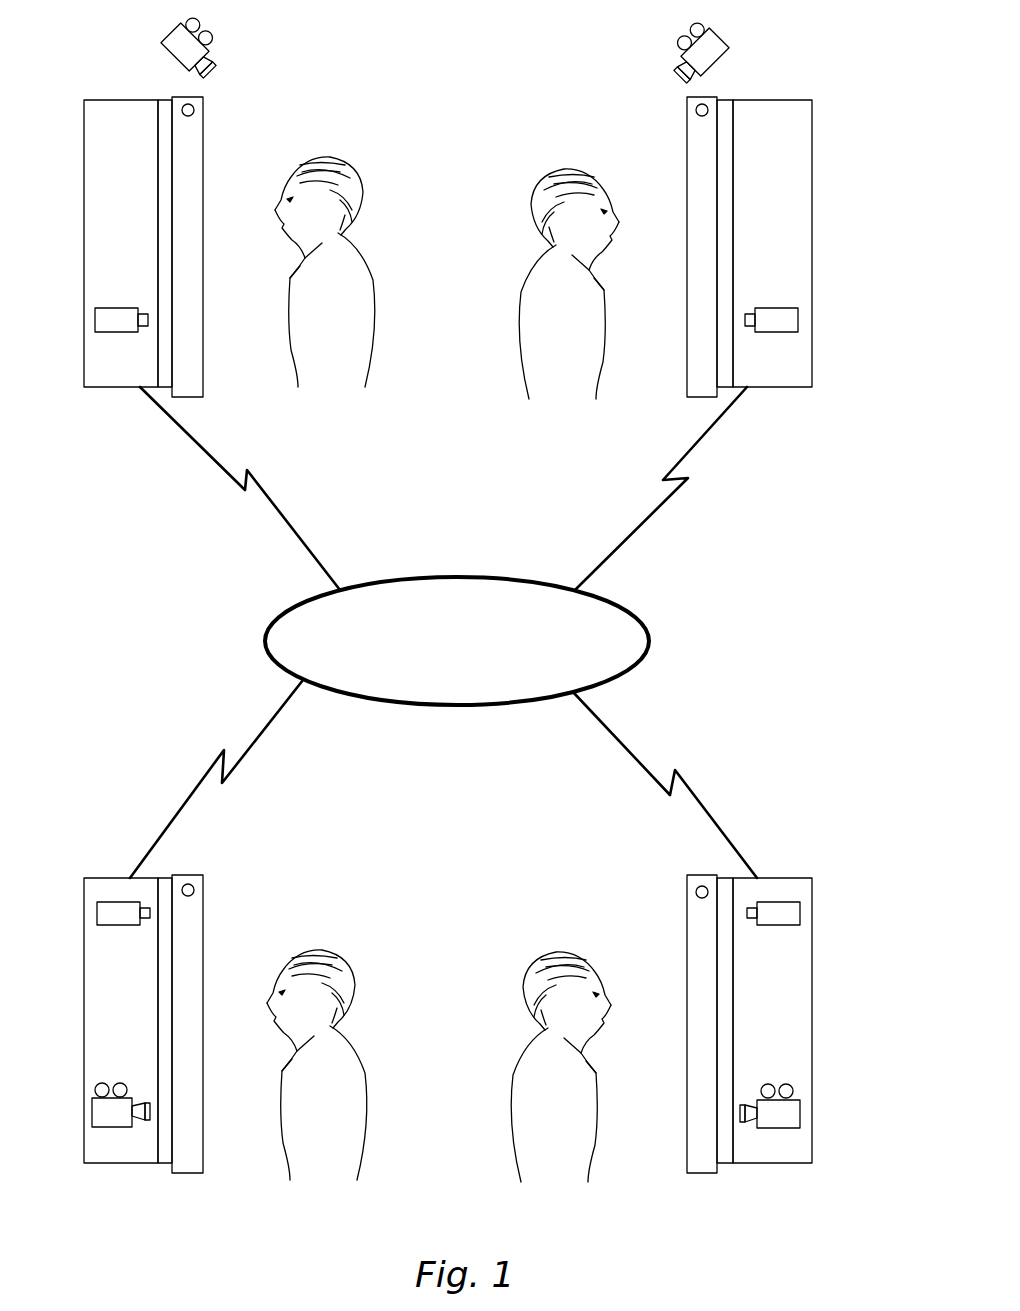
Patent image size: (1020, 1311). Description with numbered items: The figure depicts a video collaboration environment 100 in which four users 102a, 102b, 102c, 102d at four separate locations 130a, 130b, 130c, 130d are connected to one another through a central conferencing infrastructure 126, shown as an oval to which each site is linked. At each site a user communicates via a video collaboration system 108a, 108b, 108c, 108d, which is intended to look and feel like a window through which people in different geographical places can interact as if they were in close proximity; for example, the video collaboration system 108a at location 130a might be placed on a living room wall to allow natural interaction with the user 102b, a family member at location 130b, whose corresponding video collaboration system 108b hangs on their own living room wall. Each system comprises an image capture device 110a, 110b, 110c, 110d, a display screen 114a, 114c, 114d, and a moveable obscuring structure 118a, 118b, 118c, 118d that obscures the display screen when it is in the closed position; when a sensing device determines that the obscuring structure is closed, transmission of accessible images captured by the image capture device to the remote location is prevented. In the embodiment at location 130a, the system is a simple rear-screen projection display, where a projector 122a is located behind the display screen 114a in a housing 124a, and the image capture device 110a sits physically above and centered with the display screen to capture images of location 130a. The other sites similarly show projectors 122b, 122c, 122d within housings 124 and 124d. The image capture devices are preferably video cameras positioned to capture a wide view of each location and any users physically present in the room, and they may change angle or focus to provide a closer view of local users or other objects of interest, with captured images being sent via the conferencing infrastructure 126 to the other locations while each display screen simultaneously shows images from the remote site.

The video collaboration environment 100 is at (473, 64).
The user 102a is at (572, 383).
The user 102b is at (567, 1160).
The user 102c is at (333, 1130).
The user 102d is at (312, 347).
The video collaboration system 108a is at (742, 430).
The video collaboration system 108b is at (747, 816).
The video collaboration system 108c is at (144, 812).
The video collaboration system 108d is at (172, 433).
The image capture device 110a is at (712, 44).
The image capture device 110b is at (778, 1130).
The image capture device 110c is at (118, 1118).
The image capture device 110d is at (199, 52).
The display screen 114a is at (727, 107).
The display screen 114c is at (163, 888).
The display screen 114d is at (166, 108).
The moveable obscuring structure 118a is at (698, 148).
The moveable obscuring structure 118b is at (687, 1145).
The moveable obscuring structure 118c is at (183, 1163).
The moveable obscuring structure 118d is at (204, 130).
The projector 122a is at (771, 333).
The projector 122b is at (778, 908).
The projector 122c is at (115, 910).
The projector 122d is at (118, 323).
The housing 124 is at (803, 965).
The housing 124a is at (790, 120).
The housing 124d is at (112, 110).
The conferencing infrastructure 126 is at (268, 622).
The location 130a is at (689, 272).
The location 130b is at (682, 1008).
The location 130c is at (390, 1007).
The location 130d is at (210, 273).